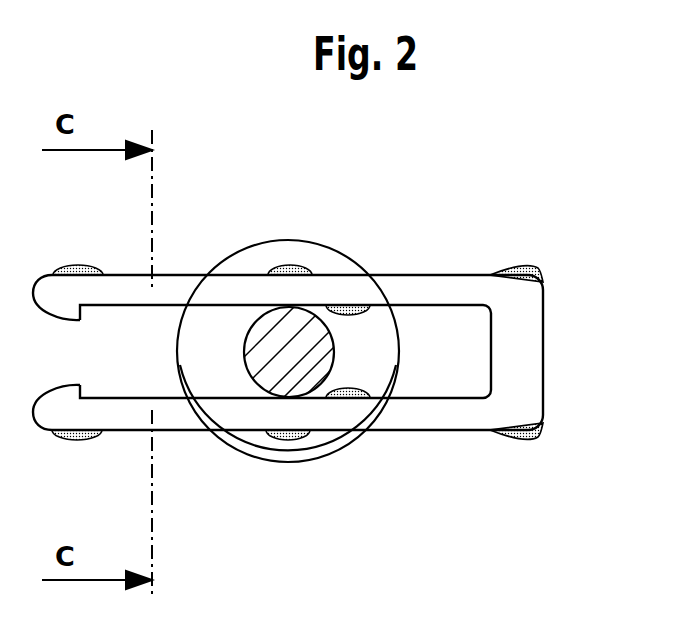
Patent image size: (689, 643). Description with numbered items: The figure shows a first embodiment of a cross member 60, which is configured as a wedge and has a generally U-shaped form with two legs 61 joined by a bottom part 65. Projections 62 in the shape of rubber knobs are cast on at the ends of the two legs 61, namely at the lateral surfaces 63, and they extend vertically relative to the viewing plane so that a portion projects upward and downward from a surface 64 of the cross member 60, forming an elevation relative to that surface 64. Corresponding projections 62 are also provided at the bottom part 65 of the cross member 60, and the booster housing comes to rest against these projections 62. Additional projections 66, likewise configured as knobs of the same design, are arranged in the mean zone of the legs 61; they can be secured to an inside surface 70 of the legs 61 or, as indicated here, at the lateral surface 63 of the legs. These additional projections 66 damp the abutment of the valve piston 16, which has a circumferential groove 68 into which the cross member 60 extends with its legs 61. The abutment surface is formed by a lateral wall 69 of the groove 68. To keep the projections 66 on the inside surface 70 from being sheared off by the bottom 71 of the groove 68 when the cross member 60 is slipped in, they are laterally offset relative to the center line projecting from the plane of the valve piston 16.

The valve piston 16 is at (260, 348).
The cross member 60 is at (567, 281).
The legs 61 is at (145, 437).
The projections 62 is at (73, 268).
The lateral surfaces 63 is at (127, 275).
The surface 64 is at (117, 416).
The bottom part 65 is at (517, 352).
The additional projections 66 is at (297, 262).
The circumferential groove 68 is at (258, 262).
The lateral wall 69 is at (253, 442).
The inside surface 70 is at (418, 322).
The bottom 71 is at (288, 398).